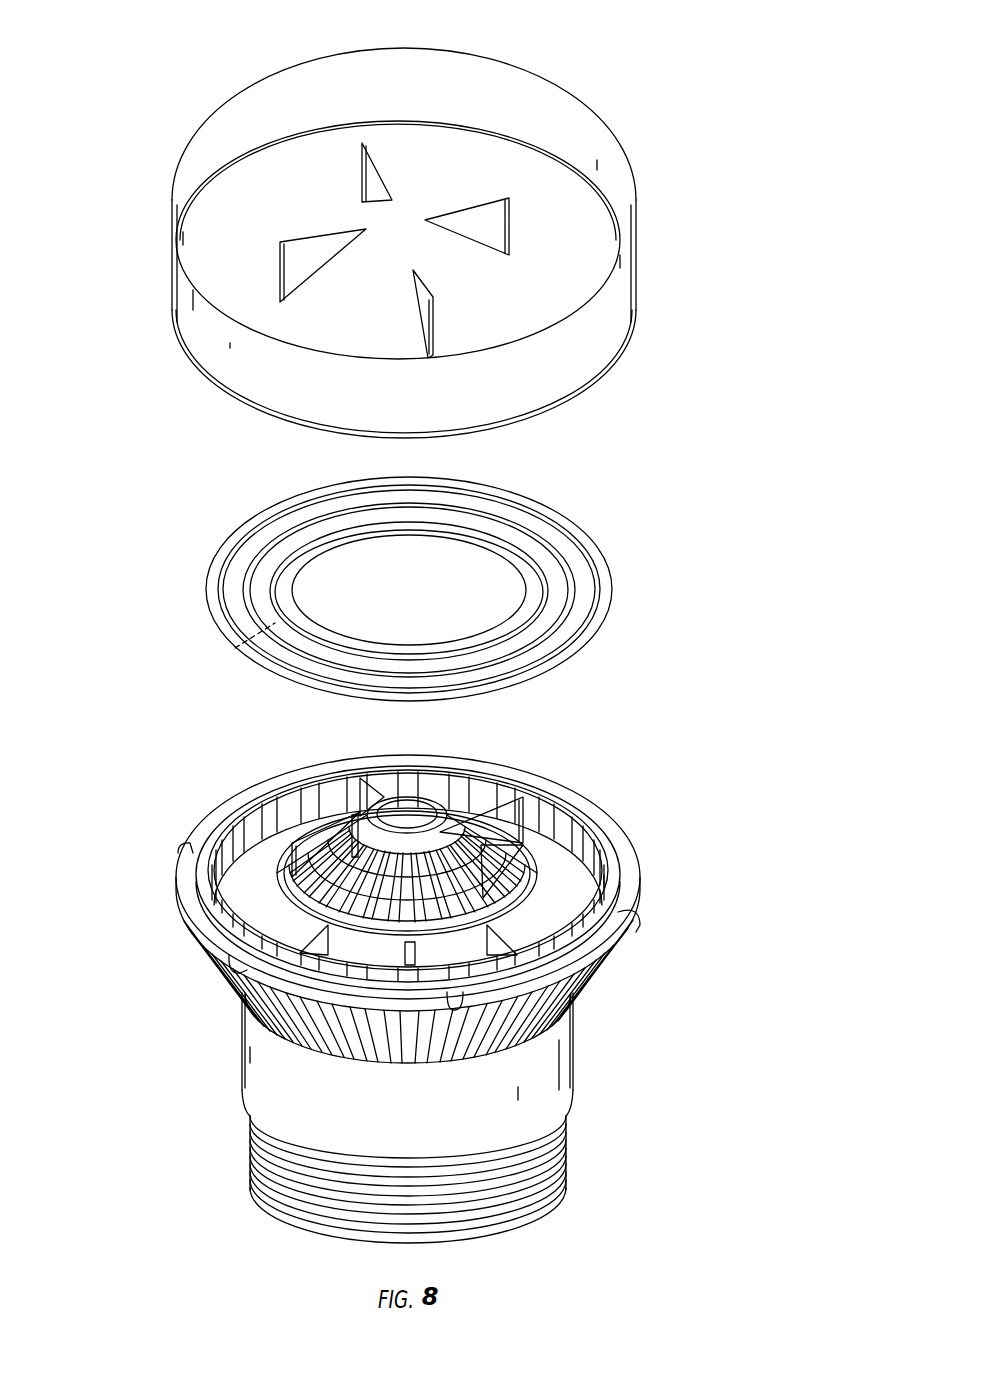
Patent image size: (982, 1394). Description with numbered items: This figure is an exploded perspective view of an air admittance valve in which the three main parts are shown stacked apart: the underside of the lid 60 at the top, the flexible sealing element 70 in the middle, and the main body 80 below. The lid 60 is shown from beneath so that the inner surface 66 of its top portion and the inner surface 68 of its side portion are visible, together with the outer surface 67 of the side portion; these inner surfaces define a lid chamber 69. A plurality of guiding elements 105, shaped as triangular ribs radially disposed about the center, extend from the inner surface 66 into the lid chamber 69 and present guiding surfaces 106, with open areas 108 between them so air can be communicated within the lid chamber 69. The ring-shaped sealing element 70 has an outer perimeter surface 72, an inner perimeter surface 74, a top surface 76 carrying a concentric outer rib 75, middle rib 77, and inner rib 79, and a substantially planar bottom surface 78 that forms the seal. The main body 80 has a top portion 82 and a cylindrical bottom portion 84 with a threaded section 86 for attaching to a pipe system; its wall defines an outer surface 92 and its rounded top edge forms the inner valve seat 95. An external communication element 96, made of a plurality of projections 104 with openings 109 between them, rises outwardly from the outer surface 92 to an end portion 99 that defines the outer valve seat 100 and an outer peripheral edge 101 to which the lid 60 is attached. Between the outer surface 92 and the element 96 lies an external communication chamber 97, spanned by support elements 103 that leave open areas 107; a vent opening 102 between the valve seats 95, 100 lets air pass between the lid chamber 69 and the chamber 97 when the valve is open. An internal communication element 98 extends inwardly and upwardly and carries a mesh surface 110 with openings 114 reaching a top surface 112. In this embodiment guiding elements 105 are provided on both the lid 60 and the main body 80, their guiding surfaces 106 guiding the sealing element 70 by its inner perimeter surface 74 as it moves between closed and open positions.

The lid 60 is at (590, 65).
The inner surface 66 is at (478, 311).
The outer surface 67 is at (518, 110).
The inner surface 68 is at (296, 385).
The lid chamber 69 is at (597, 251).
The sealing element 70 is at (676, 546).
The outer perimeter surface 72 is at (533, 500).
The inner perimeter surface 74 is at (410, 535).
The outer rib 75 is at (595, 603).
The top surface 76 is at (222, 558).
The middle rib 77 is at (558, 623).
The bottom surface 78 is at (235, 648).
The inner rib 79 is at (515, 633).
The main body 80 is at (712, 897).
The top portion 82 is at (185, 967).
The bottom portion 84 is at (210, 1133).
The threaded section 86 is at (565, 1137).
The outer surface 92 is at (573, 1045).
The inner valve seat 95 is at (273, 880).
The external communication element 96 is at (247, 1003).
The external communication chamber 97 is at (383, 780).
The internal communication element 98 is at (522, 798).
The end portion 99 is at (644, 865).
The outer valve seat 100 is at (225, 833).
The outer peripheral edge 101 is at (610, 933).
The vent opening 102 is at (355, 795).
The support elements 103 is at (562, 857).
The projections 104 is at (573, 995).
The guiding elements 105 is at (513, 234).
The guiding surfaces 106 is at (278, 290).
The open areas 107 is at (277, 822).
The open areas 108 is at (350, 165).
The openings 109 is at (372, 1050).
The mesh surface 110 is at (430, 898).
The top surface 112 is at (410, 810).
The openings 114 is at (417, 903).